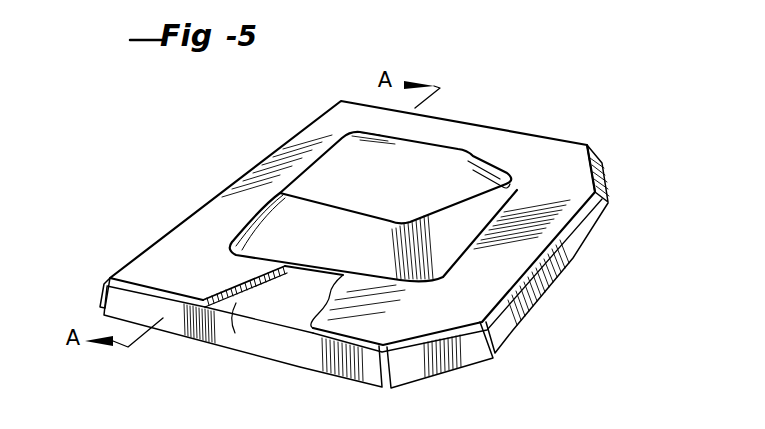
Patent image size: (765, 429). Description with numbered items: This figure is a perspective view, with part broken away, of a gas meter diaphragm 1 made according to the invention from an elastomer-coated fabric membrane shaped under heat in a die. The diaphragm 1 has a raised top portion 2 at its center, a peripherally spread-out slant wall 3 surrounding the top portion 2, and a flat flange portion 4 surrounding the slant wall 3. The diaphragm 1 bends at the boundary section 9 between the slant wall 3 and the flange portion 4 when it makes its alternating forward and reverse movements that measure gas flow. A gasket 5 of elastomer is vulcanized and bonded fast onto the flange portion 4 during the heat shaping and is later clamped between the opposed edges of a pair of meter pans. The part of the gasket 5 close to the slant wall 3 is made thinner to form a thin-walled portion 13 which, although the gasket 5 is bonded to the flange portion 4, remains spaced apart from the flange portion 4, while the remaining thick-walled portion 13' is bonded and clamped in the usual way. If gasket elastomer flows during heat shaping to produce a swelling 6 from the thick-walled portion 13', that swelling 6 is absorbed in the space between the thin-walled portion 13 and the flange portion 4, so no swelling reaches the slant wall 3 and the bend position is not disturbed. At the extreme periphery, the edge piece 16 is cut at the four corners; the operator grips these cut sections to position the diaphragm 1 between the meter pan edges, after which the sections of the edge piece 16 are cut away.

The diaphragm 1 is at (550, 300).
The top portion 2 is at (440, 148).
The slant wall 3 is at (488, 160).
The flange portion 4 is at (262, 317).
The gasket 5 is at (543, 153).
The swelling 6 is at (285, 272).
The boundary section 9 is at (303, 273).
The thin-walled portion 13 is at (260, 300).
The thick-walled portion 13' is at (208, 343).
The peripheral edge piece 16 is at (187, 327).